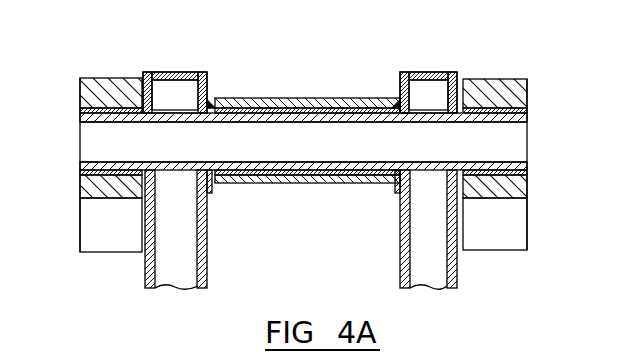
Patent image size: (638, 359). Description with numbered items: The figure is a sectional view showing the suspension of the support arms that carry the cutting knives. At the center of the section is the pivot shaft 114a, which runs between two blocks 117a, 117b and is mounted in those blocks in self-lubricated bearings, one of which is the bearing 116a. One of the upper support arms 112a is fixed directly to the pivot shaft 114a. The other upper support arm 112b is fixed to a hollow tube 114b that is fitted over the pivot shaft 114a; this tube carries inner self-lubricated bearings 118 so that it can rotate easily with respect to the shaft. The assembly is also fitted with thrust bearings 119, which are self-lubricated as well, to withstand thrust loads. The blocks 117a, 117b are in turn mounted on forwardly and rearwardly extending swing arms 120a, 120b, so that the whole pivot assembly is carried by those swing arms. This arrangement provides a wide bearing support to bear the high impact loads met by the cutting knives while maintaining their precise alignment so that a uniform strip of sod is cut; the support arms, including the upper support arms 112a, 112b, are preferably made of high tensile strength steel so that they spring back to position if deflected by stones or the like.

The upper support arm 112a is at (208, 250).
The upper support arm 112b is at (400, 230).
The pivot shaft 114a is at (80, 120).
The hollow tube 114b is at (310, 98).
The self-lubricated bearing 116a is at (80, 110).
The block 117a is at (112, 78).
The block 117b is at (505, 80).
The inner self-lubricated bearing 118 is at (243, 106).
The thrust bearing 119 is at (142, 88).
The swing arm 120a is at (80, 212).
The swing arm 120b is at (527, 220).